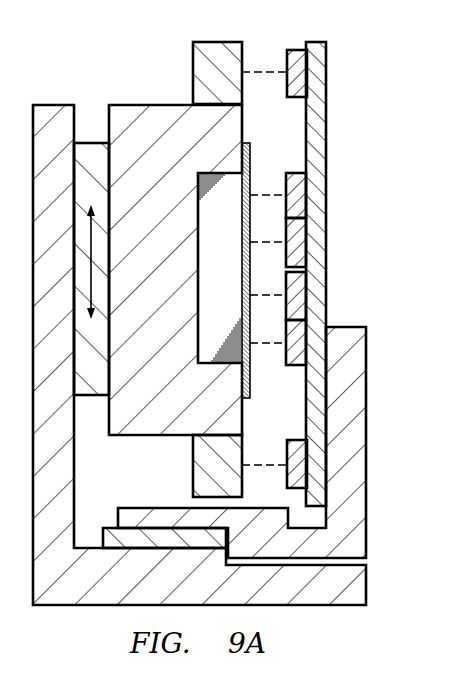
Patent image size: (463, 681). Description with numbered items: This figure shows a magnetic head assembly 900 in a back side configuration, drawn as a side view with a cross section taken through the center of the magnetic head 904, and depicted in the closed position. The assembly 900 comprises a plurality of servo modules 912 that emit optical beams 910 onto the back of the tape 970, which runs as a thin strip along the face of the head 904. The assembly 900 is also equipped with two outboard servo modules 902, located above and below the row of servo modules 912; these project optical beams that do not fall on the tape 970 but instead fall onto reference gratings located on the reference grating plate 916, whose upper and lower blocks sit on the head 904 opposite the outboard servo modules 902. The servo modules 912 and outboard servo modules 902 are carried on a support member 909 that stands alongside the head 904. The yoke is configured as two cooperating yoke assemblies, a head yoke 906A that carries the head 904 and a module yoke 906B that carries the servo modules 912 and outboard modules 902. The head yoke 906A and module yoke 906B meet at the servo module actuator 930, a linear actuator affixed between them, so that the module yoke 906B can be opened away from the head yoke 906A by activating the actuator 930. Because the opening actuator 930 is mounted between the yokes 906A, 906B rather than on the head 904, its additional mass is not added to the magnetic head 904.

The magnetic head assembly 900 is at (357, 80).
The outboard servo modules 902 is at (294, 50).
The magnetic head 904 is at (153, 108).
The head yoke 906A is at (47, 110).
The module yoke 906B is at (360, 520).
The support plate 909 is at (322, 126).
The optical beams 910 is at (262, 72).
The servo modules 912 is at (304, 196).
The reference grating plate 916 is at (212, 47).
The servo module actuator 930 is at (103, 545).
The tape 970 is at (250, 155).